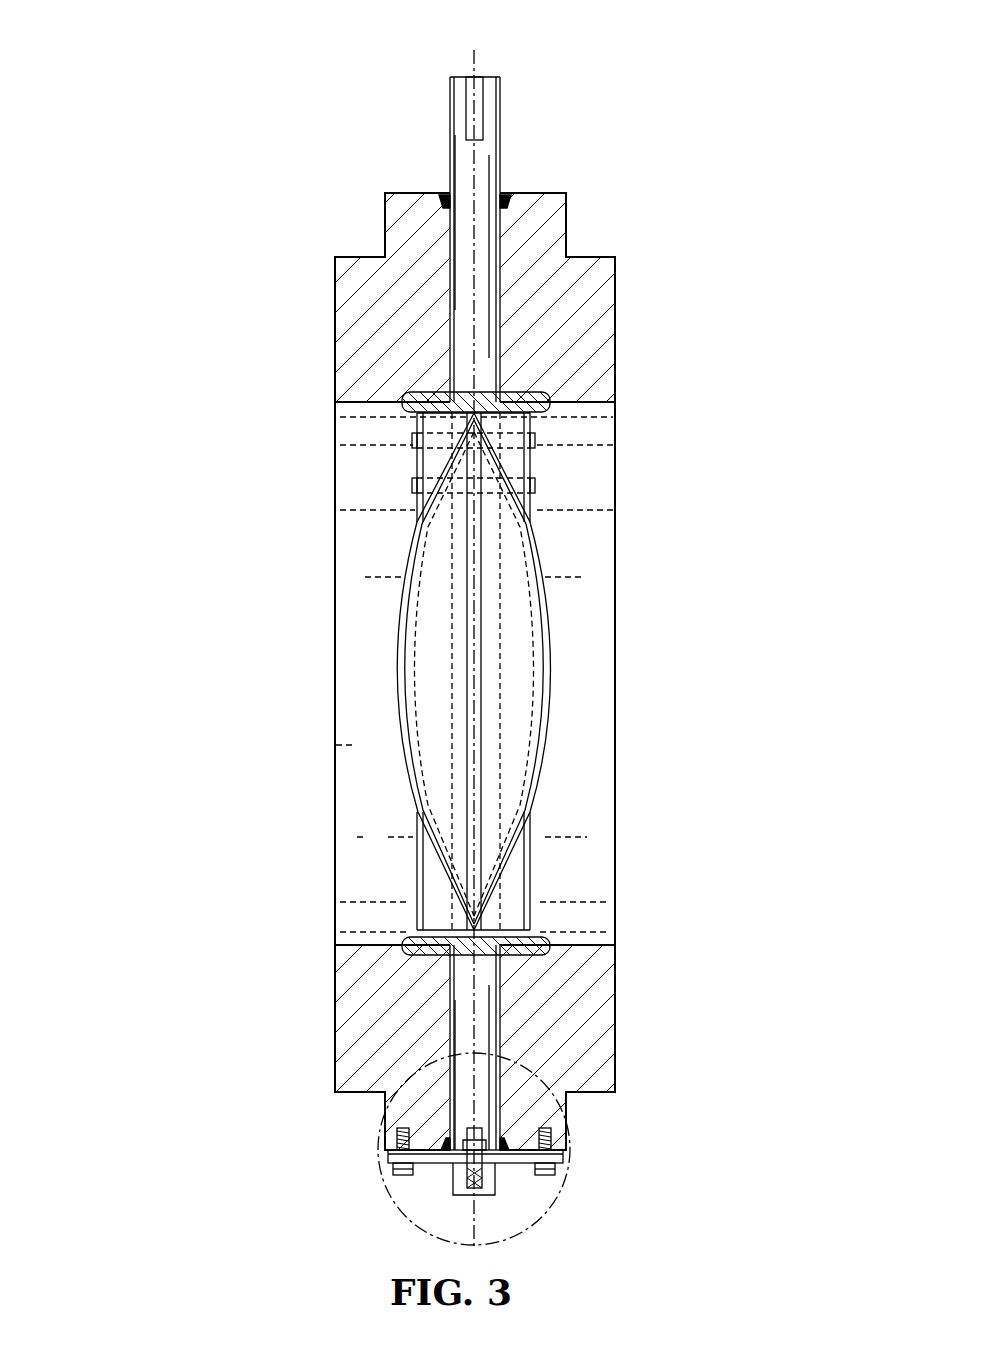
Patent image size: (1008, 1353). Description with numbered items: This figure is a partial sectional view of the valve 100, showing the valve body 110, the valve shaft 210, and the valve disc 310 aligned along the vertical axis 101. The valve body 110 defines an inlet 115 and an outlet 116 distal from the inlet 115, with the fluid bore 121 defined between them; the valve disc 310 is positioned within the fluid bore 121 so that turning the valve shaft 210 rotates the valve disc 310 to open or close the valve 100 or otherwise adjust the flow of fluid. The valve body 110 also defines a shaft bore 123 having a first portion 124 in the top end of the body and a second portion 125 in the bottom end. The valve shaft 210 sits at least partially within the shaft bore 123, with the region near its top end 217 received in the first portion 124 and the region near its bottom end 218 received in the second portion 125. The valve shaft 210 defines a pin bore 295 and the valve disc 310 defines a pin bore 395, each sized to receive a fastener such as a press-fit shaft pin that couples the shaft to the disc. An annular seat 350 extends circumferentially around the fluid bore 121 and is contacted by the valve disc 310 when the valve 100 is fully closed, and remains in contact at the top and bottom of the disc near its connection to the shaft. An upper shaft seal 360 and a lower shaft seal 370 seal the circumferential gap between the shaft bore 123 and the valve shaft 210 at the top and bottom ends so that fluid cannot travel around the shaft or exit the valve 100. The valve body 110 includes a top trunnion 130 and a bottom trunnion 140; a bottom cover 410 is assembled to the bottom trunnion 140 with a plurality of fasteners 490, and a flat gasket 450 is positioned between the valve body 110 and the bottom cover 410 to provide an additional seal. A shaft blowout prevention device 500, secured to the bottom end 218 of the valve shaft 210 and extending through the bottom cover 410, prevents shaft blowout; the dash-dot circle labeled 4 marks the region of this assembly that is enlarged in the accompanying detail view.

The valve 100 is at (356, 128).
The vertical axis 101 is at (480, 62).
The valve body 110 is at (615, 338).
The inlet 115 is at (335, 945).
The outlet 116 is at (613, 945).
The fluid bore 121 is at (355, 745).
The shaft bore 123 is at (497, 273).
The first portion 124 is at (497, 337).
The second portion 125 is at (497, 1020).
The top trunnion 130 is at (385, 233).
The bottom trunnion 140 is at (385, 1107).
The valve shaft 210 is at (502, 116).
The top end 217 is at (466, 77).
The bottom end 218 is at (482, 1187).
The pin bore 295 is at (458, 436).
The valve disc 310 is at (530, 867).
The seat 350 is at (550, 408).
The upper shaft seal 360 is at (508, 204).
The lower shaft seal 370 is at (497, 1063).
The pin bore 395 is at (512, 437).
The detail view reference 4 is at (566, 1152).
The bottom cover 410 is at (431, 1163).
The gasket 450 is at (505, 1143).
The fasteners 490 is at (402, 1176).
The shaft blowout prevention device 500 is at (498, 1177).